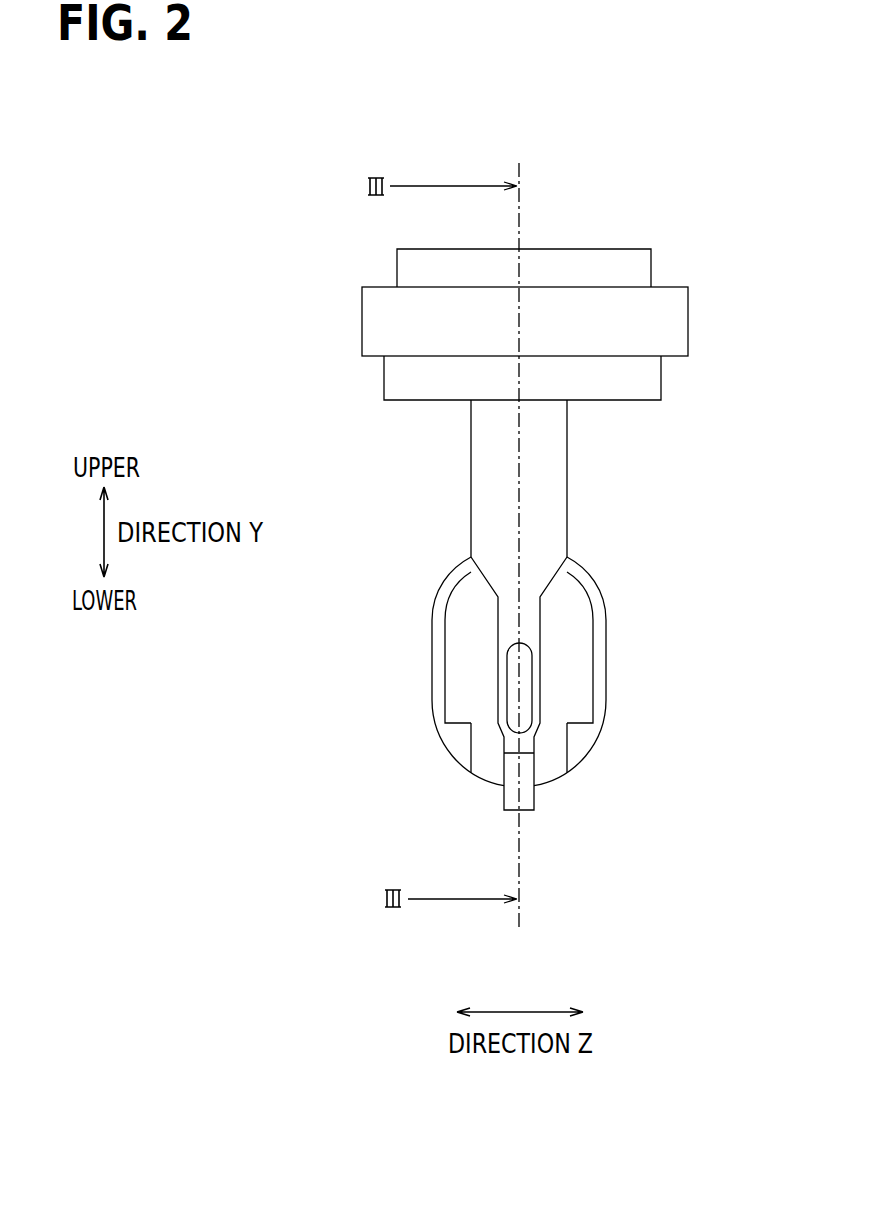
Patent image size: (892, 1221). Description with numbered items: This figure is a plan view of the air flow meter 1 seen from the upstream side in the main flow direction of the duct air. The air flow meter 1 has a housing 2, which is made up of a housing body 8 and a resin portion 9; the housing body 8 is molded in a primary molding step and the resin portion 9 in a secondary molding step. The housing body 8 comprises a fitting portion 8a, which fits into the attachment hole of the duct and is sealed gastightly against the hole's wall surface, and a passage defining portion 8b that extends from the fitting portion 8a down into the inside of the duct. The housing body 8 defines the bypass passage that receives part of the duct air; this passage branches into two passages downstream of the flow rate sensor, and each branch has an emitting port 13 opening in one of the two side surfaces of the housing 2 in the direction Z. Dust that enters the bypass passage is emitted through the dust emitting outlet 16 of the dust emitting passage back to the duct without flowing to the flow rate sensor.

The air flow meter 1 is at (764, 191).
The housing 2 is at (701, 315).
The housing body 8 is at (580, 469).
The fitting portion 8a is at (645, 372).
The passage defining portion 8b is at (537, 512).
The resin portion 9 is at (649, 244).
The emitting port 13 is at (452, 653).
The dust emitting outlet 16 is at (522, 710).